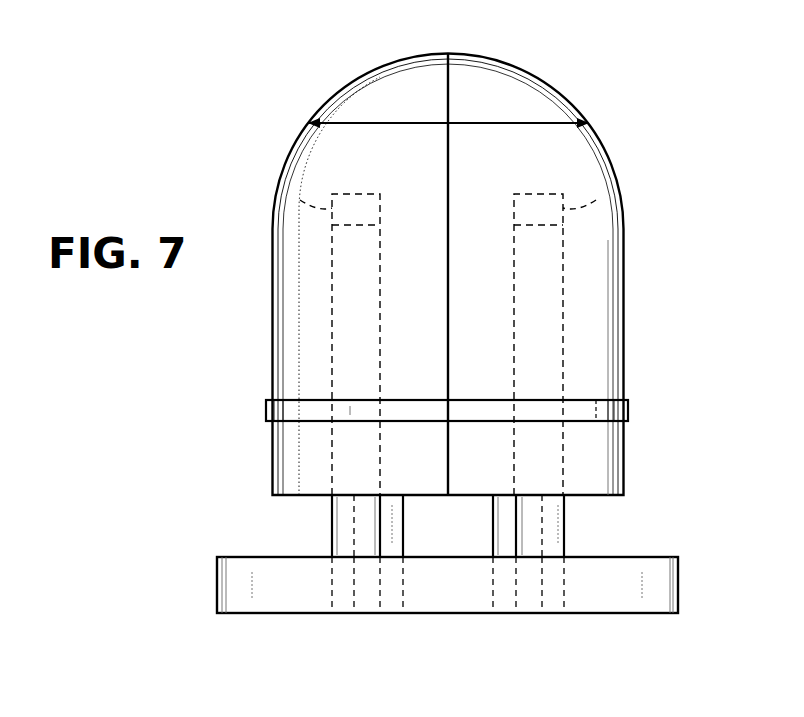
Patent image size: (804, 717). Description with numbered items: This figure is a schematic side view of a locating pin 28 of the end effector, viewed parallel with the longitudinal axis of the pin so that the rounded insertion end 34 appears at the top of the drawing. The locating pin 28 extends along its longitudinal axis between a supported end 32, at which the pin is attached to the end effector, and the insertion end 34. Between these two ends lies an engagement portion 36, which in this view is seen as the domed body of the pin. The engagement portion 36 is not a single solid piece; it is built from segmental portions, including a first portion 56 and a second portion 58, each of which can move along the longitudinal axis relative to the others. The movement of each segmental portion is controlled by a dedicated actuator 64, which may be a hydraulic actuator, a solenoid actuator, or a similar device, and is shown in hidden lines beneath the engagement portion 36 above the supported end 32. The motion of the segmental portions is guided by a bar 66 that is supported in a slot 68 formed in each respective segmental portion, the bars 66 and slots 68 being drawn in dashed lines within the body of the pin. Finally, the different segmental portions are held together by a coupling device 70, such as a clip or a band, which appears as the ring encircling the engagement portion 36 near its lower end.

The locating pin 28 is at (613, 98).
The supported end 32 is at (457, 495).
The insertion end 34 is at (508, 59).
The engagement portion 36 is at (561, 85).
The first portion 56 is at (343, 122).
The second portion 58 is at (588, 136).
The actuator 64 is at (569, 510).
The bar 66 is at (340, 292).
The slot 68 is at (300, 200).
The coupling device 70 is at (615, 410).